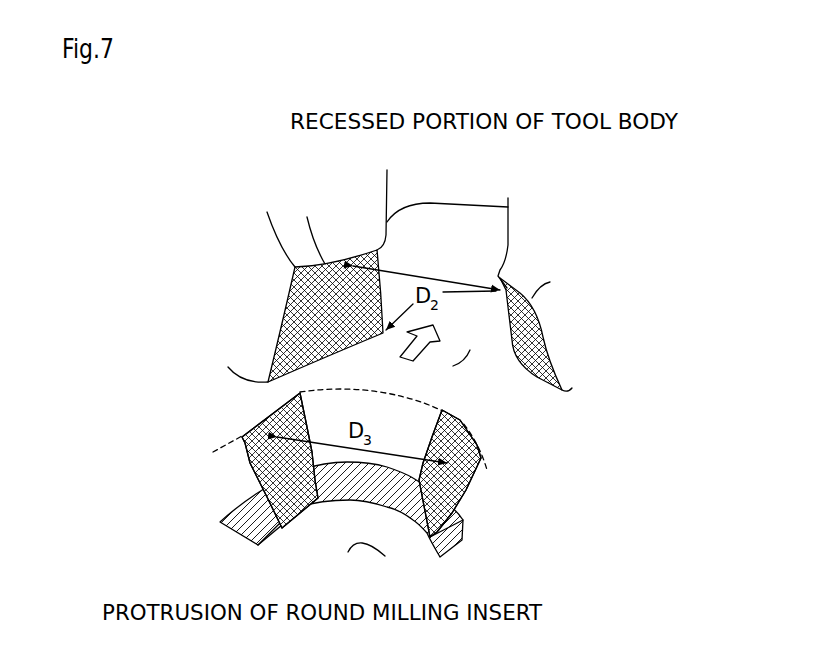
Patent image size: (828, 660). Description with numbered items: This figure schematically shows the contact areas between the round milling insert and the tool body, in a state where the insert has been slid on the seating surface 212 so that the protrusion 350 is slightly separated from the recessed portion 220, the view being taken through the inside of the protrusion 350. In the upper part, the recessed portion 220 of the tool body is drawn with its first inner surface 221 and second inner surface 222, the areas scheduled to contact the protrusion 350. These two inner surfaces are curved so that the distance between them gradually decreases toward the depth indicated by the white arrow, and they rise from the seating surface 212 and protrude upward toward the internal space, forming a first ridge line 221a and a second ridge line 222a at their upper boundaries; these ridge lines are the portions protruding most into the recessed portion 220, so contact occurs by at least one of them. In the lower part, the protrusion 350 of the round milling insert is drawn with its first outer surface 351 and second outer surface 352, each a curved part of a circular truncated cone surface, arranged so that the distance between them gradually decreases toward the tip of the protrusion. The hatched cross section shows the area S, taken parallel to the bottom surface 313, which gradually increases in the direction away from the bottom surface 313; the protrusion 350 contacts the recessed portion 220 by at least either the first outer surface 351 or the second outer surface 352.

The recessed portion 220 is at (459, 220).
The first inner surface 221 is at (535, 322).
The first ridge line 221a is at (518, 290).
The second inner surface 222 is at (315, 317).
The second ridge line 222a is at (314, 226).
The seating surface 212 is at (472, 345).
The protrusion 350 is at (380, 415).
The first outer surface 351 is at (458, 478).
The second outer surface 352 is at (260, 468).
The bottom surface 313 is at (384, 557).
The area of the cross section S is at (388, 508).